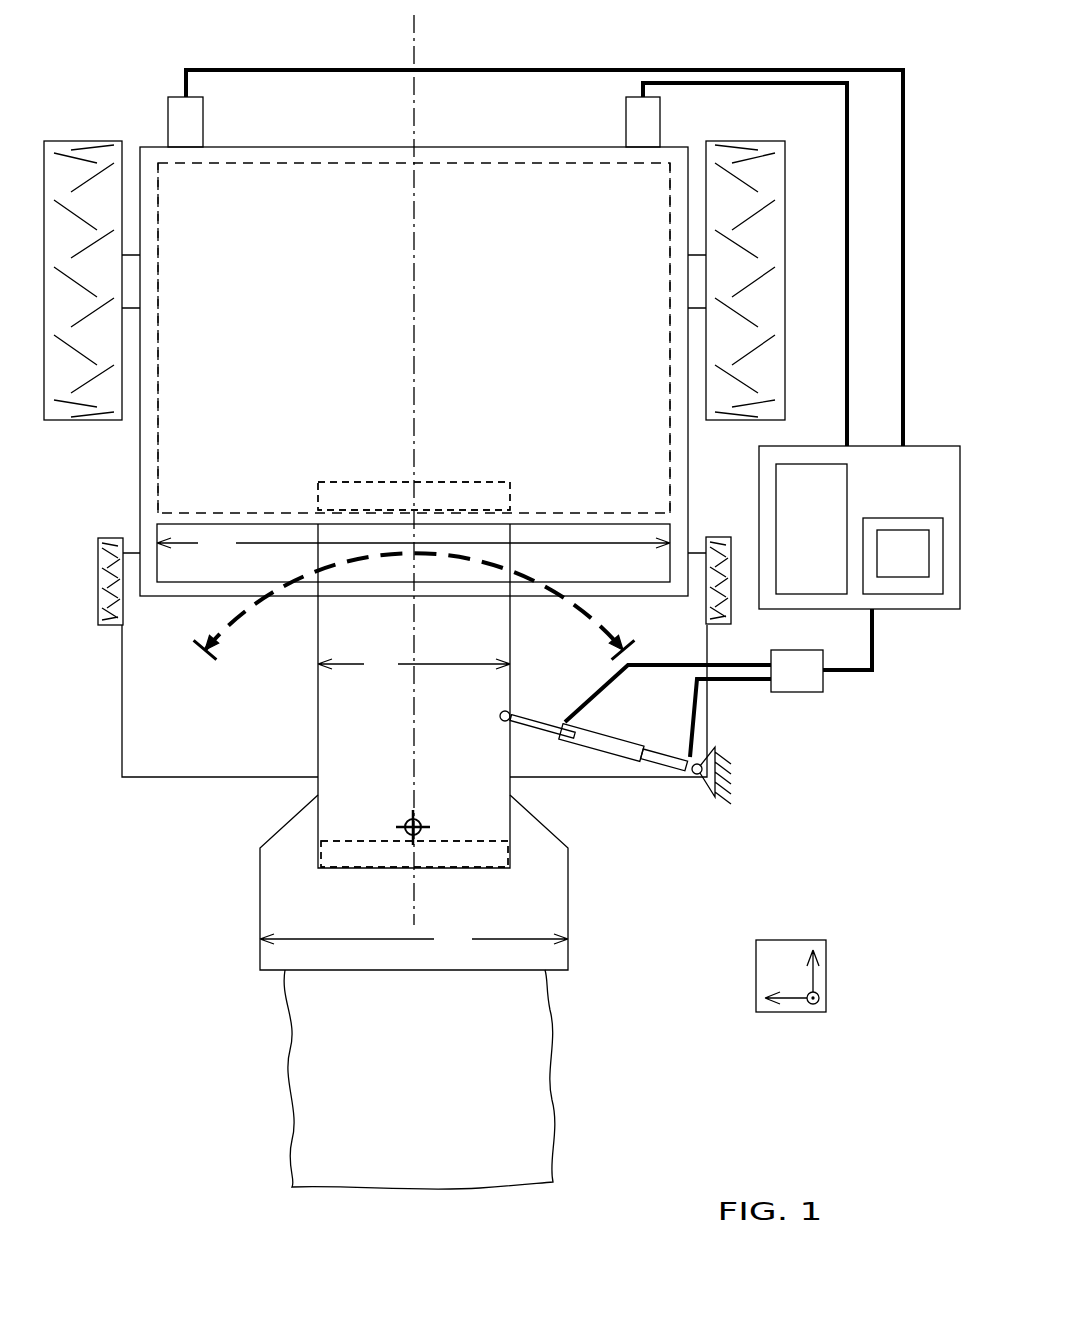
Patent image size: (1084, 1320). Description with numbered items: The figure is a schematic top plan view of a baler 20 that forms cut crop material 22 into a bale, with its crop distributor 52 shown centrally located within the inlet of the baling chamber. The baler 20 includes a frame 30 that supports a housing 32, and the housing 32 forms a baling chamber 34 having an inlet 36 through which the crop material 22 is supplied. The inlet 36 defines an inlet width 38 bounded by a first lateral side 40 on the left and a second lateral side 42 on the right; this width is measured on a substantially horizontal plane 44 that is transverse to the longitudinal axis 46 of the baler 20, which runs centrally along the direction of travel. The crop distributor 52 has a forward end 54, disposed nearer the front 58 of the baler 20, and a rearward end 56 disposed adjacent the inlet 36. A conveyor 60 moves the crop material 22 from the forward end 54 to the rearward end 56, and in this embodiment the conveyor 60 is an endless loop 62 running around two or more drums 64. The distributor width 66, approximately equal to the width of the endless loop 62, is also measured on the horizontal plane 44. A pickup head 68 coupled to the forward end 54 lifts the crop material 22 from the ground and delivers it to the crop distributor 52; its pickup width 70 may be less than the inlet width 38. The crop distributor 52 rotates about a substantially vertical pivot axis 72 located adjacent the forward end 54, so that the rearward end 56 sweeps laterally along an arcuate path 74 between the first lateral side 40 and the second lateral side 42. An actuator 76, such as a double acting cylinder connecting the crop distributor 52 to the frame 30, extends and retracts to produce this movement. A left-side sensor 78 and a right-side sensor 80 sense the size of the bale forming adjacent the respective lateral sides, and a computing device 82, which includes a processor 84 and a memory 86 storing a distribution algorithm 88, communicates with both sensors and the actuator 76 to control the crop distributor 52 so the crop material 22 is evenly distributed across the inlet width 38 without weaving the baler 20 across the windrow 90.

The baler 20 is at (178, 798).
The crop material 22 is at (340, 1105).
The frame 30 is at (122, 693).
The housing 32 is at (328, 147).
The baling chamber 34 is at (463, 163).
The inlet 36 is at (210, 567).
The inlet width 38 is at (413, 543).
The first lateral side 40 is at (668, 297).
The second lateral side 42 is at (160, 331).
The horizontal plane 44 is at (782, 968).
The longitudinal axis 46 is at (415, 276).
The crop distributor 52 is at (302, 729).
The forward end 54 is at (448, 870).
The rearward end 56 is at (438, 482).
The front 58 is at (300, 993).
The conveyor 60 is at (365, 749).
The endless loop 62 is at (318, 678).
The drums 64 is at (473, 497).
The distributor width 66 is at (414, 664).
The pickup head 68 is at (568, 913).
The pickup width 70 is at (414, 938).
The pivot axis 72 is at (408, 820).
The arcuate path 74 is at (351, 566).
The actuator 76 is at (628, 735).
The left-side sensor 78 is at (641, 120).
The right-side sensor 80 is at (185, 119).
The computing device 82 is at (762, 601).
The processor 84 is at (800, 542).
The memory 86 is at (920, 518).
The distribution algorithm 88 is at (889, 565).
The windrow 90 is at (405, 1193).